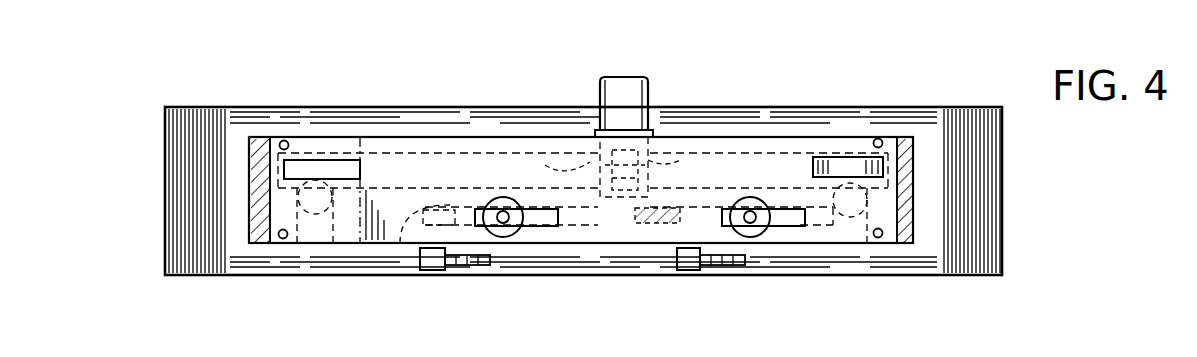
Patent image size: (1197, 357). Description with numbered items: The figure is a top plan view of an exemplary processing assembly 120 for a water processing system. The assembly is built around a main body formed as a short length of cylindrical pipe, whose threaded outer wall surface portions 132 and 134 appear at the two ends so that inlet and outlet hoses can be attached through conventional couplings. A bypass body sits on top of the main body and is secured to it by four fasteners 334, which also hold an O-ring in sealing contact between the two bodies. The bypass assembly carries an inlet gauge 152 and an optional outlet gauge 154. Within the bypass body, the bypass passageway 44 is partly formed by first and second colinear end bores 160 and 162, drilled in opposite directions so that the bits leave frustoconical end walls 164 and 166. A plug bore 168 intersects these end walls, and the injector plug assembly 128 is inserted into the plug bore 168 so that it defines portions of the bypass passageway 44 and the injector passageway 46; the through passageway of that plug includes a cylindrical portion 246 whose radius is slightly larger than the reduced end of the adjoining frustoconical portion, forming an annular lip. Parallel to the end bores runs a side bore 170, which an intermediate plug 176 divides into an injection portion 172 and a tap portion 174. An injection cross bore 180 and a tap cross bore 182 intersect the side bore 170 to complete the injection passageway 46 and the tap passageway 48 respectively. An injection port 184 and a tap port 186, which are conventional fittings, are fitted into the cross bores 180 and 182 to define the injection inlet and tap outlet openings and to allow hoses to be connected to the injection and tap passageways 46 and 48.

The processing assembly 120 is at (977, 82).
The threaded outer wall surface portion 132 is at (987, 277).
The threaded outer wall surface portion 134 is at (180, 102).
The fasteners 334 is at (284, 140).
The outlet gauge 154 is at (332, 158).
The inlet gauge 152 is at (838, 156).
The first end bore 160 is at (755, 140).
The injector plug assembly 128 is at (602, 73).
The cylindrical portion 246 is at (628, 156).
The frustoconical end wall 164 is at (680, 150).
The frustoconical end wall 166 is at (545, 158).
The plug bore 168 is at (592, 135).
The second end bore 162 is at (408, 150).
The bypass passageway 44 is at (452, 150).
The tap passageway 48 is at (818, 250).
The injection portion 172 is at (580, 250).
The side bore 170 is at (585, 275).
The tap portion 174 is at (752, 242).
The intermediate plug 176 is at (663, 228).
The tap cross bore 182 is at (668, 250).
The injection port 184 is at (437, 273).
The tap port 186 is at (690, 273).
The injection passageway 46 is at (400, 248).
The injection cross bore 180 is at (412, 250).